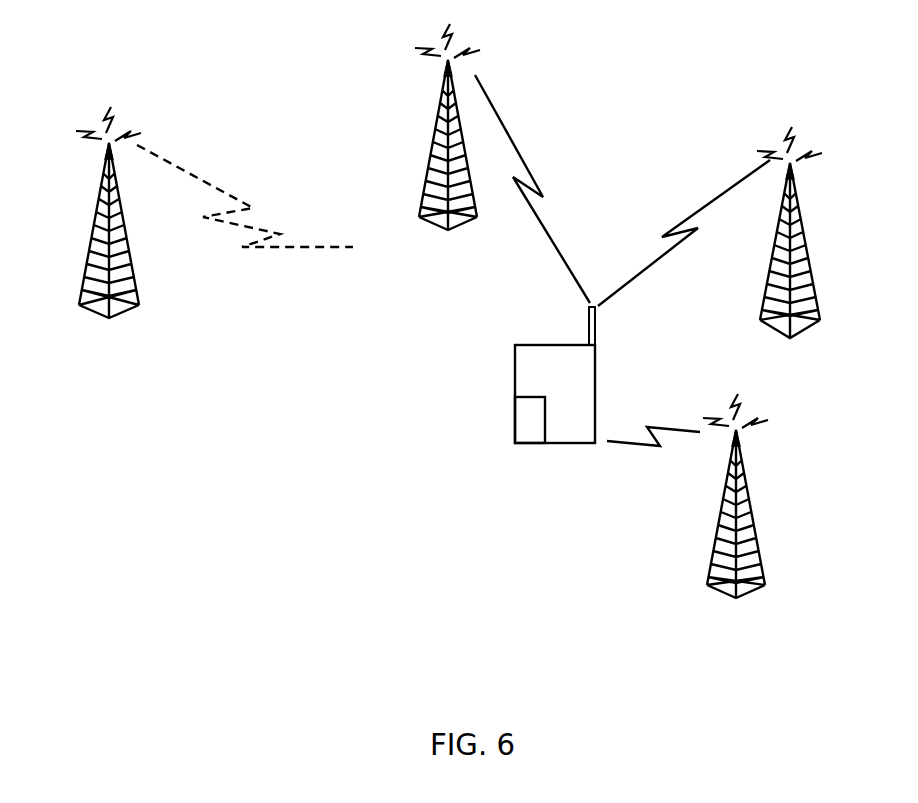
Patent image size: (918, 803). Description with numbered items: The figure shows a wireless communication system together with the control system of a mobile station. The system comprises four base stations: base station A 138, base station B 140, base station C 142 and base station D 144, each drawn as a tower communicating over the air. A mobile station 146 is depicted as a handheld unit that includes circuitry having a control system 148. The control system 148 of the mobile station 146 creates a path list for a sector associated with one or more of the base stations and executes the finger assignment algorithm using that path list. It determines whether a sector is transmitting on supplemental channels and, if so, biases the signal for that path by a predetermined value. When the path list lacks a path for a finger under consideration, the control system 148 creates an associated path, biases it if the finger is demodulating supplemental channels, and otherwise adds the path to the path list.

The base station A 138 is at (111, 352).
The base station B 140 is at (441, 266).
The base station C 142 is at (818, 371).
The base station D 144 is at (731, 637).
The mobile station 146 is at (558, 345).
The control system 148 is at (530, 397).